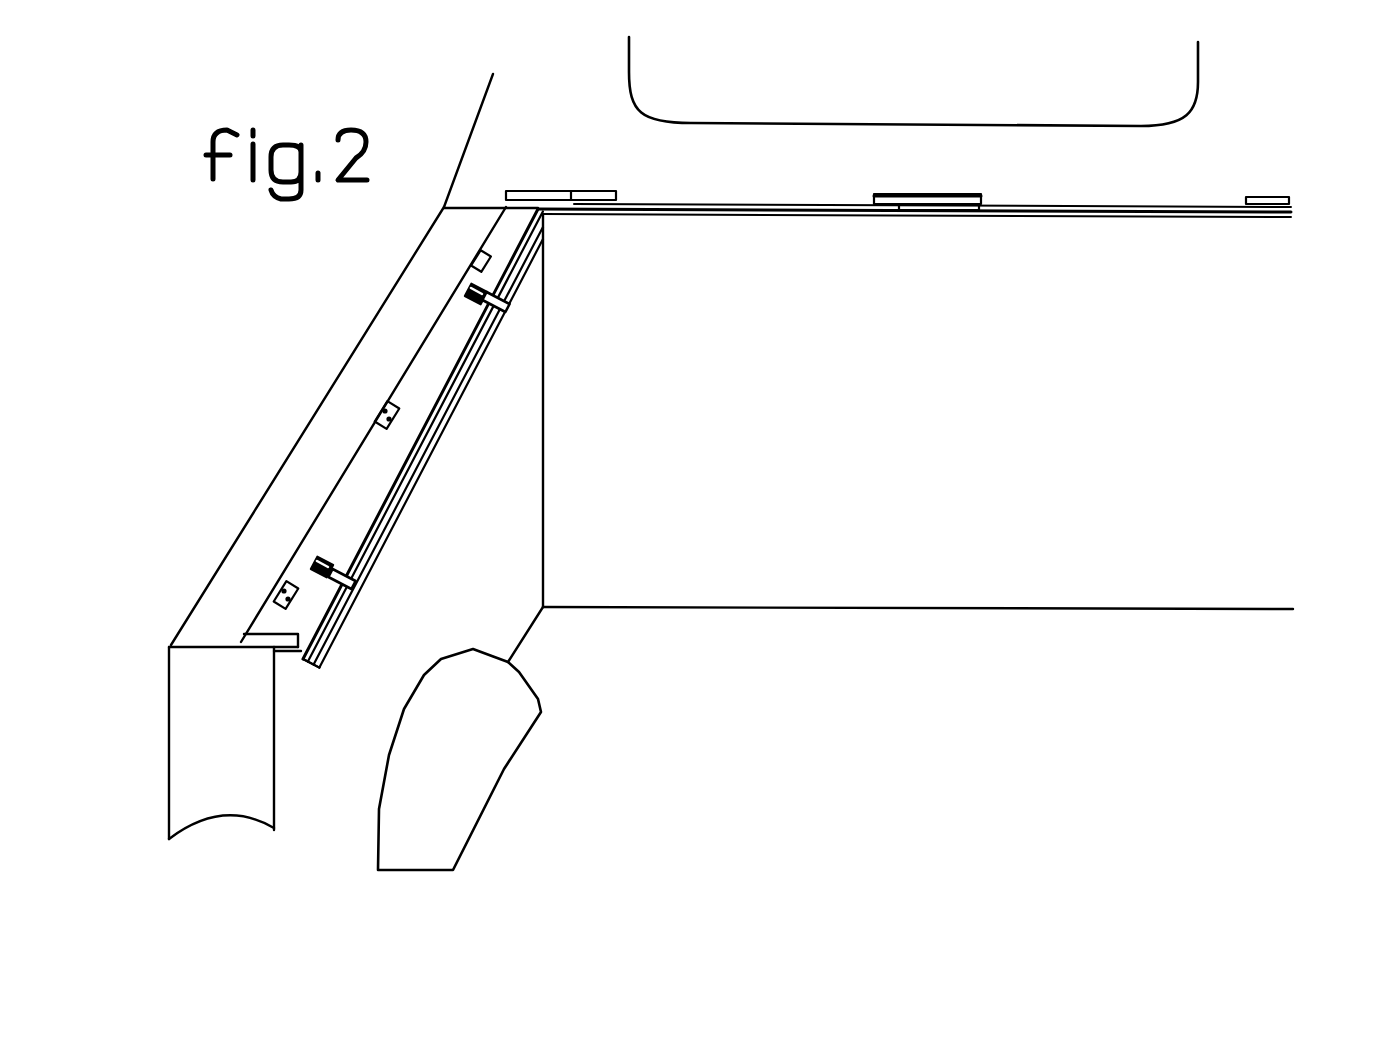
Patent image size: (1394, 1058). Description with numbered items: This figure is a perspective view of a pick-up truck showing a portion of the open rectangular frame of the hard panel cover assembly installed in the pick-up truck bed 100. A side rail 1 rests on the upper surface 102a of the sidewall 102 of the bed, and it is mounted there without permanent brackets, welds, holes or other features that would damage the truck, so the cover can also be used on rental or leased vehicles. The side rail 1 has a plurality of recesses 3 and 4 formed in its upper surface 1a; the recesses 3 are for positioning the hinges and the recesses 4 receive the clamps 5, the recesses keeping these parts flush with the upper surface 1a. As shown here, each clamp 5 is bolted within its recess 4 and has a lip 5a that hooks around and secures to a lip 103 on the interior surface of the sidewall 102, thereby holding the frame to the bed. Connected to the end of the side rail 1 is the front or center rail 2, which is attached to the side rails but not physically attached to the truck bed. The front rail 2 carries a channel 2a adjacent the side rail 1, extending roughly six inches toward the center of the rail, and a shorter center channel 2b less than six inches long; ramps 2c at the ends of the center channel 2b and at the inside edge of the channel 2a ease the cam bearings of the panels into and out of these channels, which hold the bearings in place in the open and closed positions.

The side rail 1 is at (512, 202).
The upper surface 1a is at (370, 473).
The front rail 2 is at (750, 202).
The channel 2a is at (570, 192).
The center channel 2b is at (938, 194).
The ramp 2c is at (977, 208).
The recess 3 is at (475, 255).
The recess 4 is at (470, 290).
The clamp 5 is at (507, 302).
The lip 5a is at (500, 313).
The pick-up truck bed 100 is at (1060, 275).
The sidewall 102 is at (187, 663).
The upper surface 102a is at (270, 513).
The lip 103 is at (298, 655).